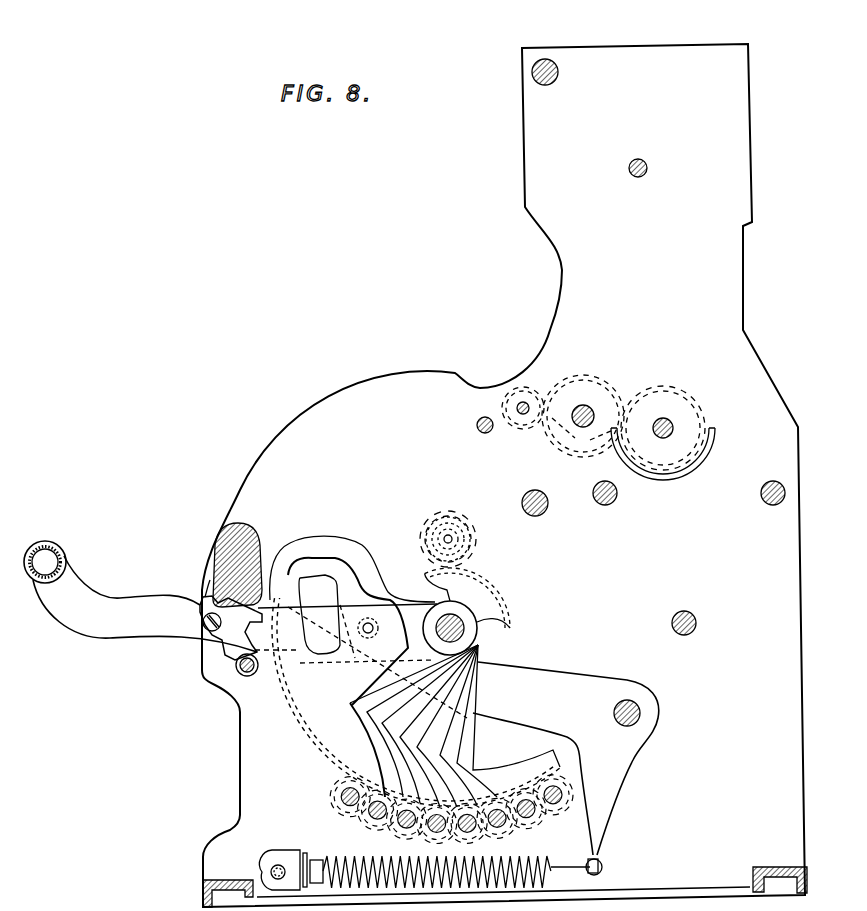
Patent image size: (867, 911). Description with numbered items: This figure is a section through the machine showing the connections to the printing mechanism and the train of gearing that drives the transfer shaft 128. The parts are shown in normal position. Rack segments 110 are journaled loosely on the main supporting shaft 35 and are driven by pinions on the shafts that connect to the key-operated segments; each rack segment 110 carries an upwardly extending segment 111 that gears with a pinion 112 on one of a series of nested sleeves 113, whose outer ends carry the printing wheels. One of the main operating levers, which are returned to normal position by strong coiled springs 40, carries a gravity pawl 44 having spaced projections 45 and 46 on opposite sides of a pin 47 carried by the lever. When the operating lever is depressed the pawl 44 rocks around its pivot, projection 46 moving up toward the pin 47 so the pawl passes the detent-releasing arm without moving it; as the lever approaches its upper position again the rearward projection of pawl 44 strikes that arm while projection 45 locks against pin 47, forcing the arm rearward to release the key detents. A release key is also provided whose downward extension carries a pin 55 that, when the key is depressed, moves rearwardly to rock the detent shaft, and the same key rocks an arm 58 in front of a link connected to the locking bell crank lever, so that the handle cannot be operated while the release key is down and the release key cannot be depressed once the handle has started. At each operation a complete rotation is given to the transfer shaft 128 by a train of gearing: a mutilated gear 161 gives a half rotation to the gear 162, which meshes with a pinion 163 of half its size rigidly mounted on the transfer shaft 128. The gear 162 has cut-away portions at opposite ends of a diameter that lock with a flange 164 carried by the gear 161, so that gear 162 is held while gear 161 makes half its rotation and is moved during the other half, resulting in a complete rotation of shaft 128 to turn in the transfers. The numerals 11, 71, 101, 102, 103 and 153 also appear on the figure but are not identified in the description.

The frame plate 11 is at (241, 672).
The main supporting shaft 35 is at (462, 635).
The coiled springs 40 is at (257, 660).
The gravity pawl 44 is at (227, 627).
The projection 45 is at (202, 606).
The projection 46 is at (243, 620).
The pin 47 is at (210, 594).
The pin 55 is at (566, 768).
The arm 58 is at (172, 630).
The handle ring 71 is at (59, 560).
The pinions 101 is at (367, 823).
The spring 102 is at (382, 823).
The connecting link 103 is at (570, 424).
The rack segments 110 is at (313, 723).
The upwardly extending segment 111 is at (507, 603).
The pinions 112 is at (477, 537).
The nested sleeves 113 is at (461, 524).
The transfer shaft 128 is at (521, 415).
The shaft 153 is at (670, 435).
The mutilated gear 161 is at (683, 402).
The gear 162 is at (596, 388).
The pinion 163 is at (530, 392).
The flange 164 is at (660, 478).